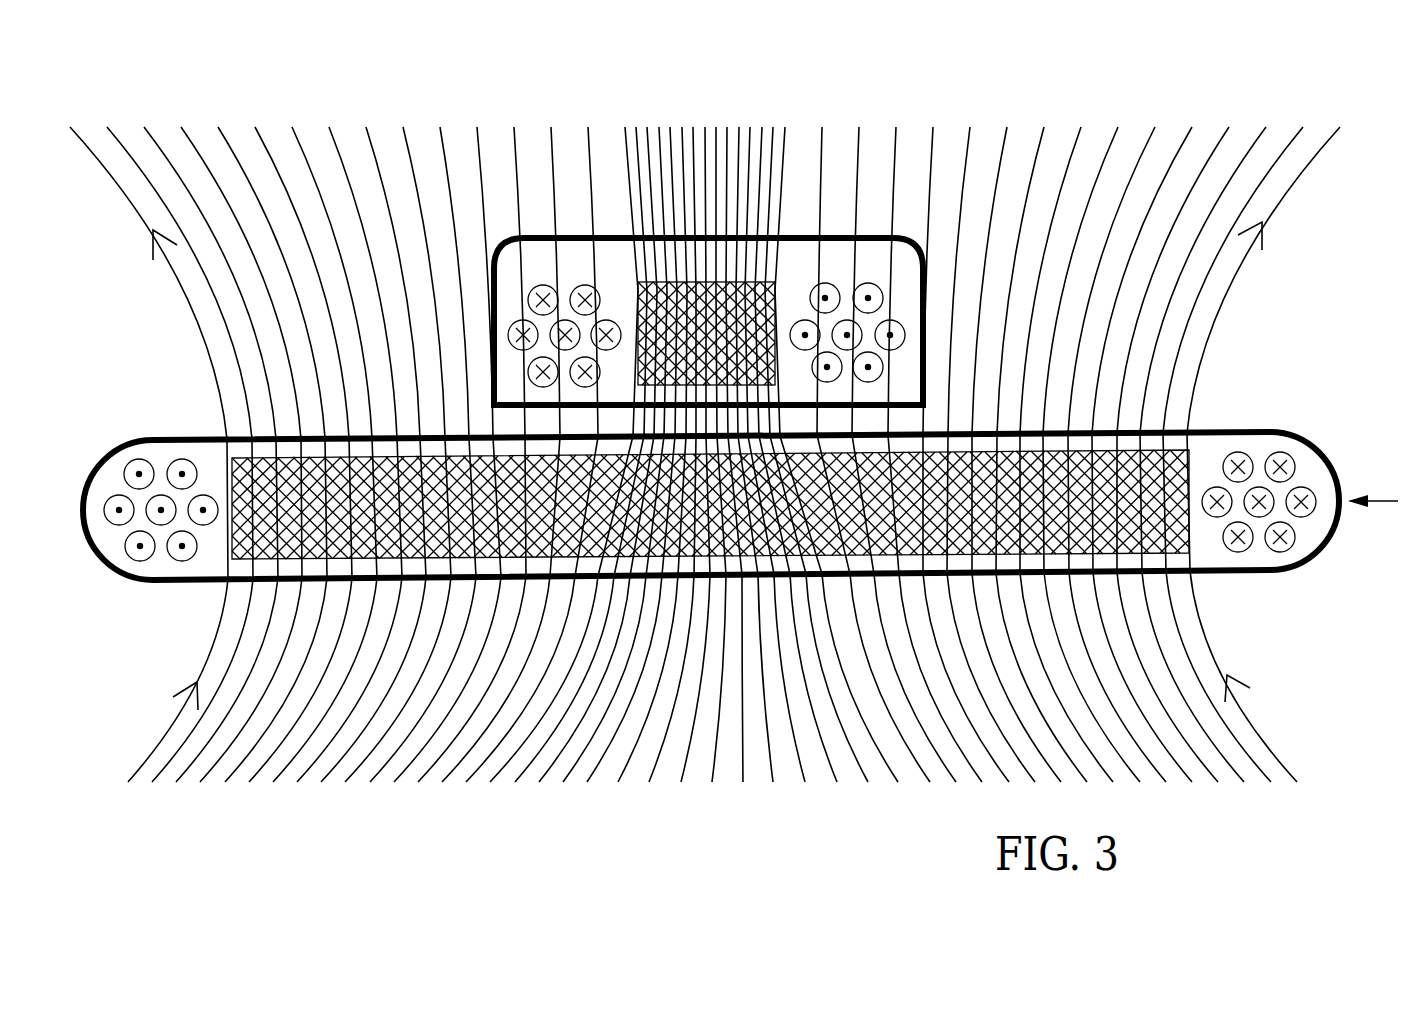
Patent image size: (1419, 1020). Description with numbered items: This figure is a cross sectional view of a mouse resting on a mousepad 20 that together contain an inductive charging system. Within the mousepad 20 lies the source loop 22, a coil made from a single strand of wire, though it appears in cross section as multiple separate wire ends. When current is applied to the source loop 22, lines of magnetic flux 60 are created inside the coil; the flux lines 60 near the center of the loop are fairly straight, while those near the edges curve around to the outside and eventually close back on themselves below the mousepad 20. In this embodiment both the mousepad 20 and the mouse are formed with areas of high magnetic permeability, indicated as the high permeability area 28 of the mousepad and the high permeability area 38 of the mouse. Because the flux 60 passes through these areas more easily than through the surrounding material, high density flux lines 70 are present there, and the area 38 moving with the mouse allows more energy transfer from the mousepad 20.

The mousepad 20 is at (1237, 430).
The source loop 22 is at (187, 459).
The high permeability area of the mousepad 28 is at (1137, 576).
The high permeability area of the mouse 38 is at (776, 304).
The lines of magnetic flux 60 is at (1110, 137).
The high density flux lines 70 is at (625, 108).